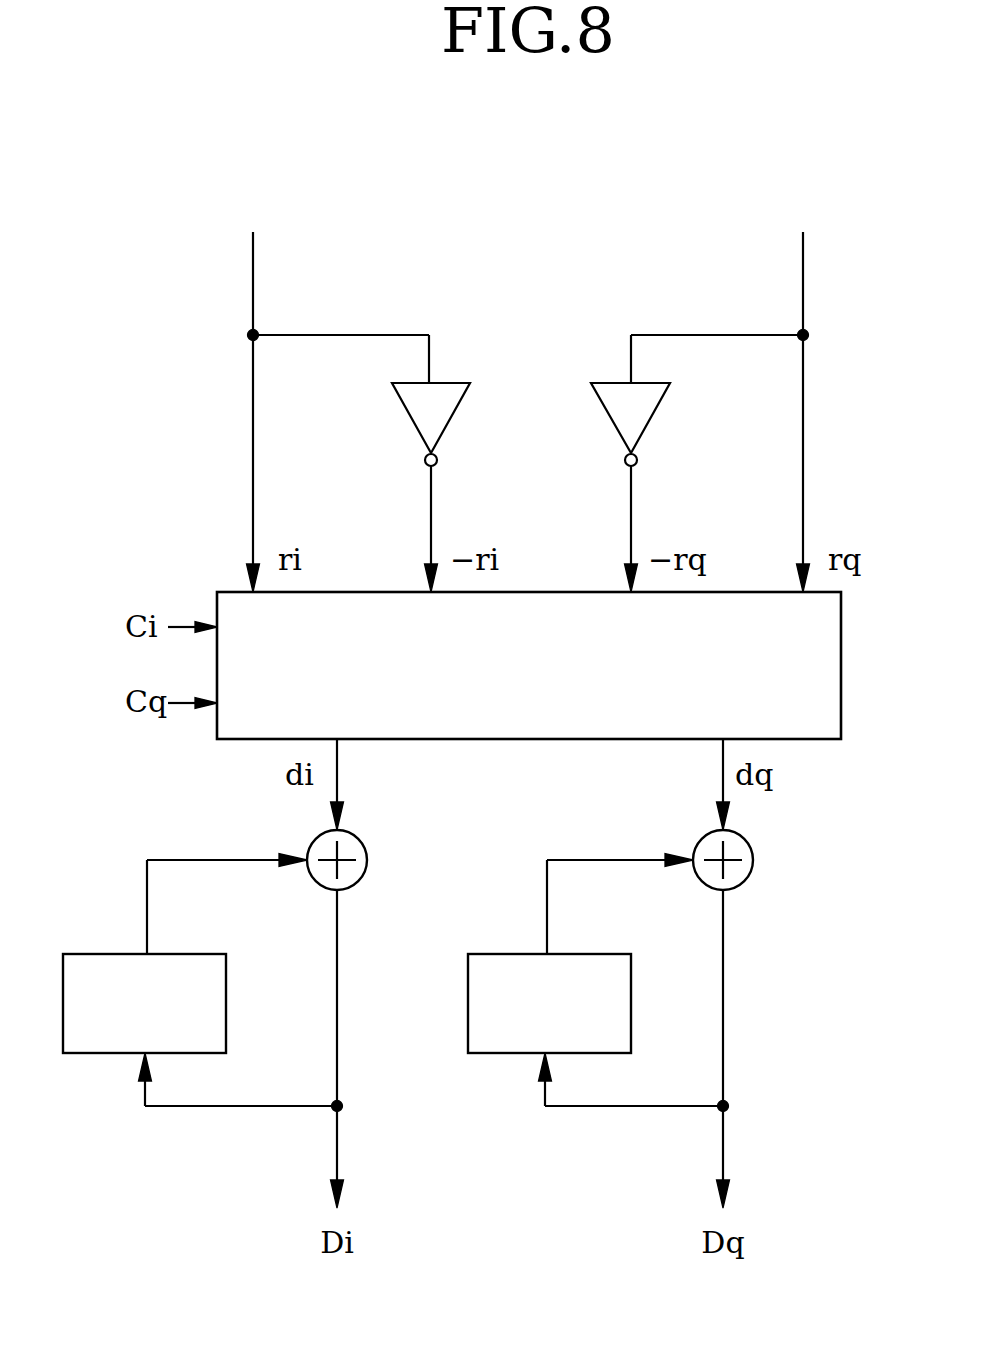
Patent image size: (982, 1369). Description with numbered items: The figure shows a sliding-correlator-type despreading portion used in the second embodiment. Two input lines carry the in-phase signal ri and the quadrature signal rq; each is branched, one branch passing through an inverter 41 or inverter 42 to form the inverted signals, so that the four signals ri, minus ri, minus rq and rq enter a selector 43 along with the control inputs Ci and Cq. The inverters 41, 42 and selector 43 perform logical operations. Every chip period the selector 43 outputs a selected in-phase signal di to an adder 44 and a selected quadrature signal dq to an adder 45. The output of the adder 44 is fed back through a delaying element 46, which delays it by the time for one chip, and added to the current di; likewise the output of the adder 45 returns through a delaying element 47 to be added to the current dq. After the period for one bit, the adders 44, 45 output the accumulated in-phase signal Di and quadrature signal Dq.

The inverter 41 is at (407, 424).
The inverter 42 is at (655, 424).
The selector 43 is at (555, 665).
The adder 44 is at (363, 860).
The adder 45 is at (749, 860).
The delaying element 46 is at (144, 984).
The delaying element 47 is at (549, 984).